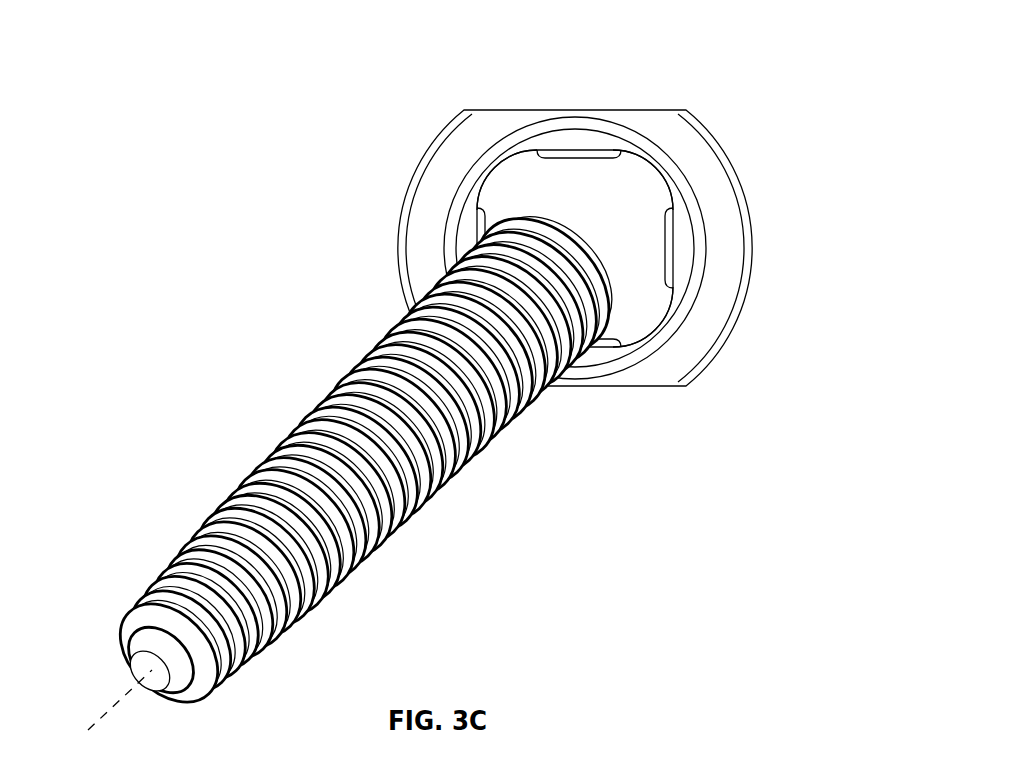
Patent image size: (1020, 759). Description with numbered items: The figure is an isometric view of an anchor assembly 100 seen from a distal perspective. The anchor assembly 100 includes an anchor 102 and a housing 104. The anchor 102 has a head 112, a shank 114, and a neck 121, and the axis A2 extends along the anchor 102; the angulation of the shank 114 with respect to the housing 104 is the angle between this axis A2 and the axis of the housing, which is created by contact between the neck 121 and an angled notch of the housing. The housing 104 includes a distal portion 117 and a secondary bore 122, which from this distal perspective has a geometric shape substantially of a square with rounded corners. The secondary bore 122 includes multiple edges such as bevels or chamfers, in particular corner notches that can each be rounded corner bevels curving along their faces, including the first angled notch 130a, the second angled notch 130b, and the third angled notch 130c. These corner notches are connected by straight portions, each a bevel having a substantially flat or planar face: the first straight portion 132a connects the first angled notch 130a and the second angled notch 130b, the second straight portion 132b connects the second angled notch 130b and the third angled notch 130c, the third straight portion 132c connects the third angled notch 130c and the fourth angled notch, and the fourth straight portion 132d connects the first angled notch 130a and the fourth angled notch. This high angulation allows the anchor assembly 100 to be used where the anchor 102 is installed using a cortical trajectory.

The anchor assembly 100 is at (462, 376).
The anchor 102 is at (335, 461).
The housing 104 is at (603, 241).
The head 112 is at (571, 263).
The shank 114 is at (421, 514).
The distal portion 117 is at (438, 131).
The neck 121 is at (446, 236).
The secondary bore 122 is at (555, 142).
The first angled notch 130a is at (502, 147).
The second angled notch 130b is at (641, 168).
The third angled notch 130c is at (624, 305).
The first straight portion 132a is at (480, 222).
The second straight portion 132b is at (607, 150).
The third straight portion 132c is at (672, 210).
The fourth straight portion 132d is at (596, 352).
The axis A2 is at (100, 716).